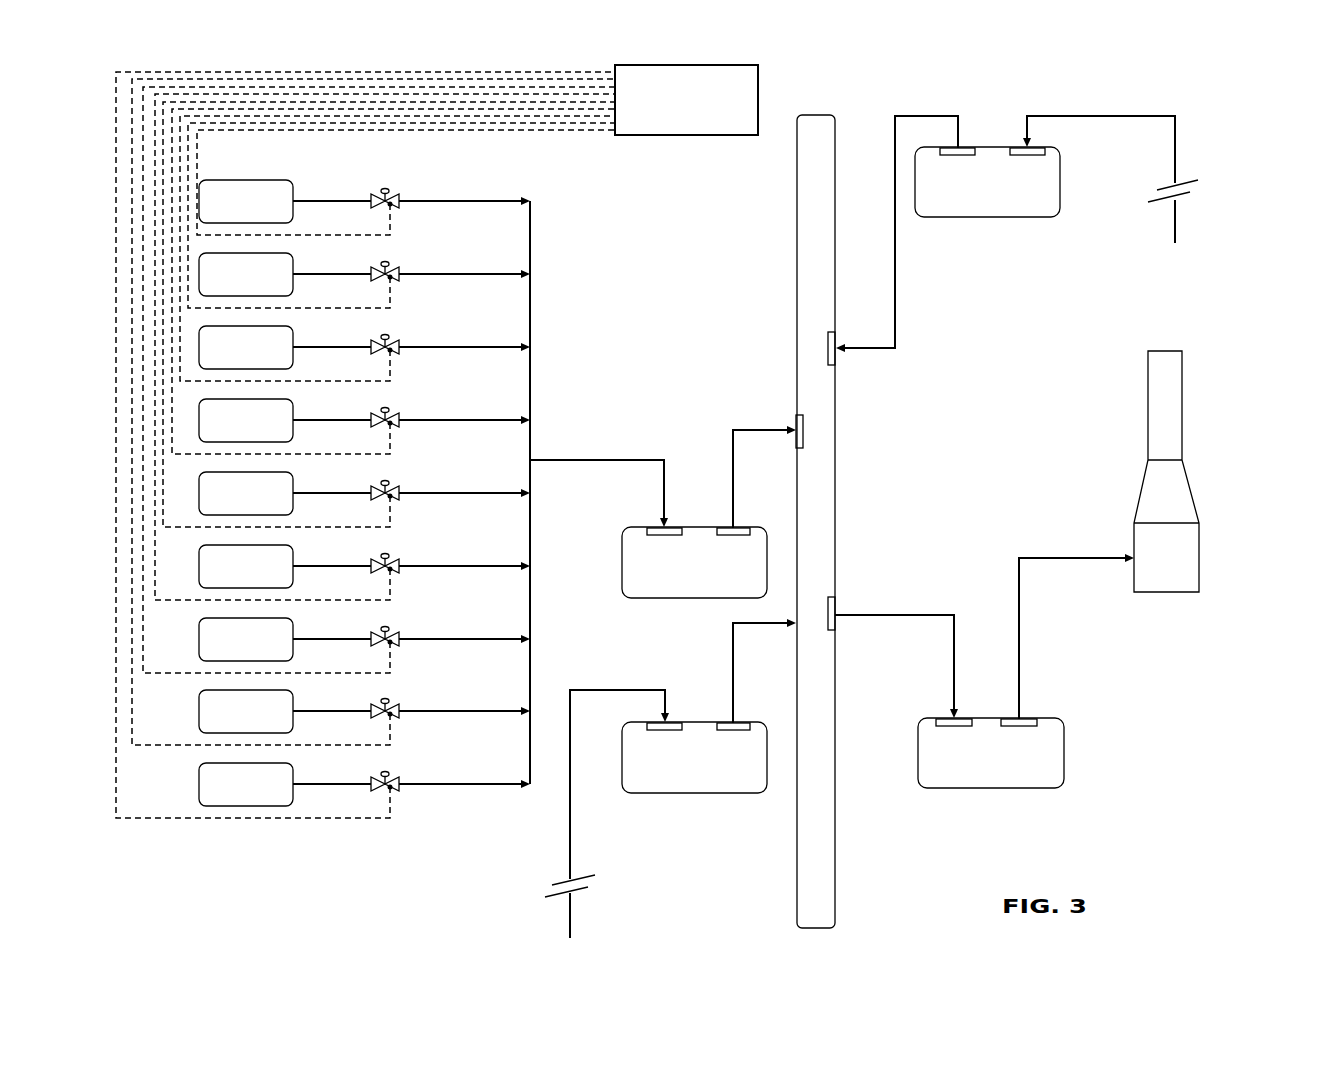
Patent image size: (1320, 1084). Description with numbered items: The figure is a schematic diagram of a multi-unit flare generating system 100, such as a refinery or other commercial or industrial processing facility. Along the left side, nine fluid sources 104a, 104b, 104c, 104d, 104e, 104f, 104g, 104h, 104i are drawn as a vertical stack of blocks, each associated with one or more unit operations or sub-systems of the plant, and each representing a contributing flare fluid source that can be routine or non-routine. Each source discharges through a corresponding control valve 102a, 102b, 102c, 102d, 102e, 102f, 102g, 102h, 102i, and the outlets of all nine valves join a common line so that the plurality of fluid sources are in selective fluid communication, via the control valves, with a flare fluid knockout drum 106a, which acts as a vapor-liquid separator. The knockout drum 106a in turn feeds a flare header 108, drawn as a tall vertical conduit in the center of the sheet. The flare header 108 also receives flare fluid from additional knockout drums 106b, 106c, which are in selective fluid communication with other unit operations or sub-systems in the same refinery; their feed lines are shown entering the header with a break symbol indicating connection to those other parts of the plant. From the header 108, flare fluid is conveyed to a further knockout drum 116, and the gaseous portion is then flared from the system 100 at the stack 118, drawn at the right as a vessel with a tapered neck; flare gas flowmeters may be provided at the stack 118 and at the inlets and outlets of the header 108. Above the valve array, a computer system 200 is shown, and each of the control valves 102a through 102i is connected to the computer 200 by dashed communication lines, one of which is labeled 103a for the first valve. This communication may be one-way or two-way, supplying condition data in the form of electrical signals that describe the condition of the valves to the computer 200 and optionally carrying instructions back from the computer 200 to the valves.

The multi-unit flare generating system 100 is at (1281, 131).
The control valve 102a is at (398, 197).
The control valve 102b is at (398, 270).
The control valve 102c is at (398, 343).
The control valve 102d is at (398, 416).
The control valve 102e is at (398, 489).
The control valve 102f is at (398, 562).
The control valve 102g is at (398, 635).
The control valve 102h is at (398, 707).
The control valve 102i is at (398, 780).
The control line 103a is at (563, 131).
The fluid source 104a is at (246, 201).
The fluid source 104b is at (246, 274).
The fluid source 104c is at (246, 347).
The fluid source 104d is at (246, 420).
The fluid source 104e is at (246, 493).
The fluid source 104f is at (246, 566).
The fluid source 104g is at (246, 639).
The fluid source 104h is at (246, 711).
The fluid source 104i is at (246, 784).
The flare fluid knockout drum 106a is at (694, 562).
The additional knockout drum 106b is at (694, 757).
The additional knockout drum 106c is at (987, 182).
The flare header 108 is at (796, 267).
The knockout drum 116 is at (991, 753).
The stack 118 is at (1195, 495).
The computer system 200 is at (686, 100).